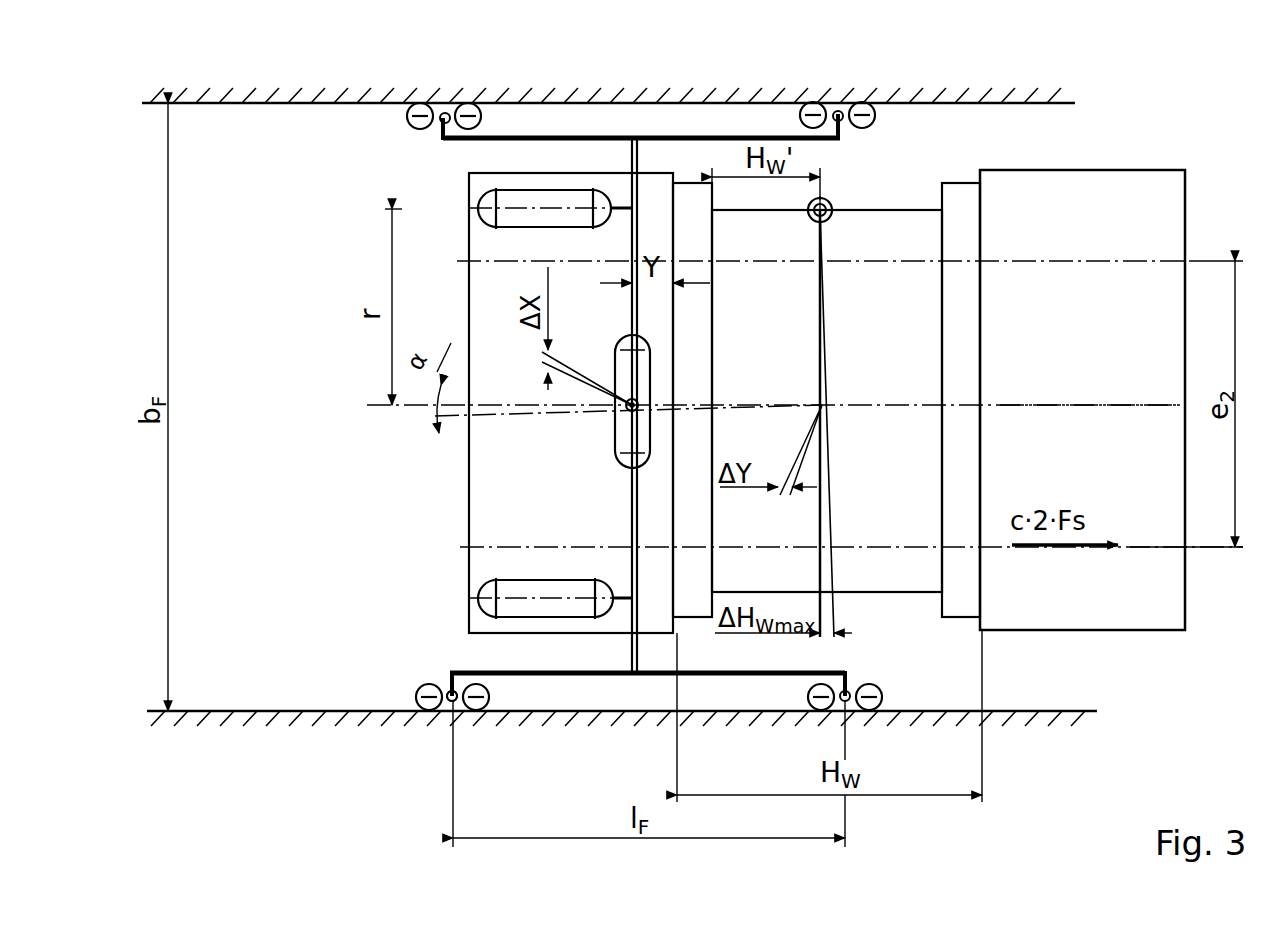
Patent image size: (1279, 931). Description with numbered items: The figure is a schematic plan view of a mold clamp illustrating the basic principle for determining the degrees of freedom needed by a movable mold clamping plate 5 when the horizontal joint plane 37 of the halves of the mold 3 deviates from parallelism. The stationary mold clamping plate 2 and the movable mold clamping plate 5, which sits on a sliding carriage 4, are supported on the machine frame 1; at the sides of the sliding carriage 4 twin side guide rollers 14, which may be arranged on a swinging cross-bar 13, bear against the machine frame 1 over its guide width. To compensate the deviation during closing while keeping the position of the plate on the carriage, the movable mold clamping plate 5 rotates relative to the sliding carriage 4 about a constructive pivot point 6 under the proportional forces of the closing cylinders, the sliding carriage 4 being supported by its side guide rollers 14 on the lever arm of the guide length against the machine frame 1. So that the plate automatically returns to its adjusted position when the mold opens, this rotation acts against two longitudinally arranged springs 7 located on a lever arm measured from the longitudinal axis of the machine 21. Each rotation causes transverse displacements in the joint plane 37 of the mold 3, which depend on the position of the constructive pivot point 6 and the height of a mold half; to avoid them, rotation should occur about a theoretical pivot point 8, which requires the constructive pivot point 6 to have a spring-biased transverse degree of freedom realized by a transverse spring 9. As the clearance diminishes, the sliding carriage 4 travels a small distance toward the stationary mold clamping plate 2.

The machine frame 1 is at (230, 98).
The stationary mold clamping plate 2 is at (1115, 212).
The mold 3 is at (875, 235).
The sliding carriage 4 is at (572, 133).
The movable mold clamping plate 5 is at (517, 563).
The constructive pivot point 6 is at (628, 407).
The longitudinally arranged springs 7 is at (520, 205).
The theoretical pivot point 8 is at (748, 227).
The transverse spring 9 is at (628, 432).
The swinging cross-bar 13 is at (433, 703).
The twin side guide rollers 14 is at (418, 701).
The longitudinal axis of the machine 21 is at (1083, 398).
The horizontal joint plane 37 is at (823, 573).